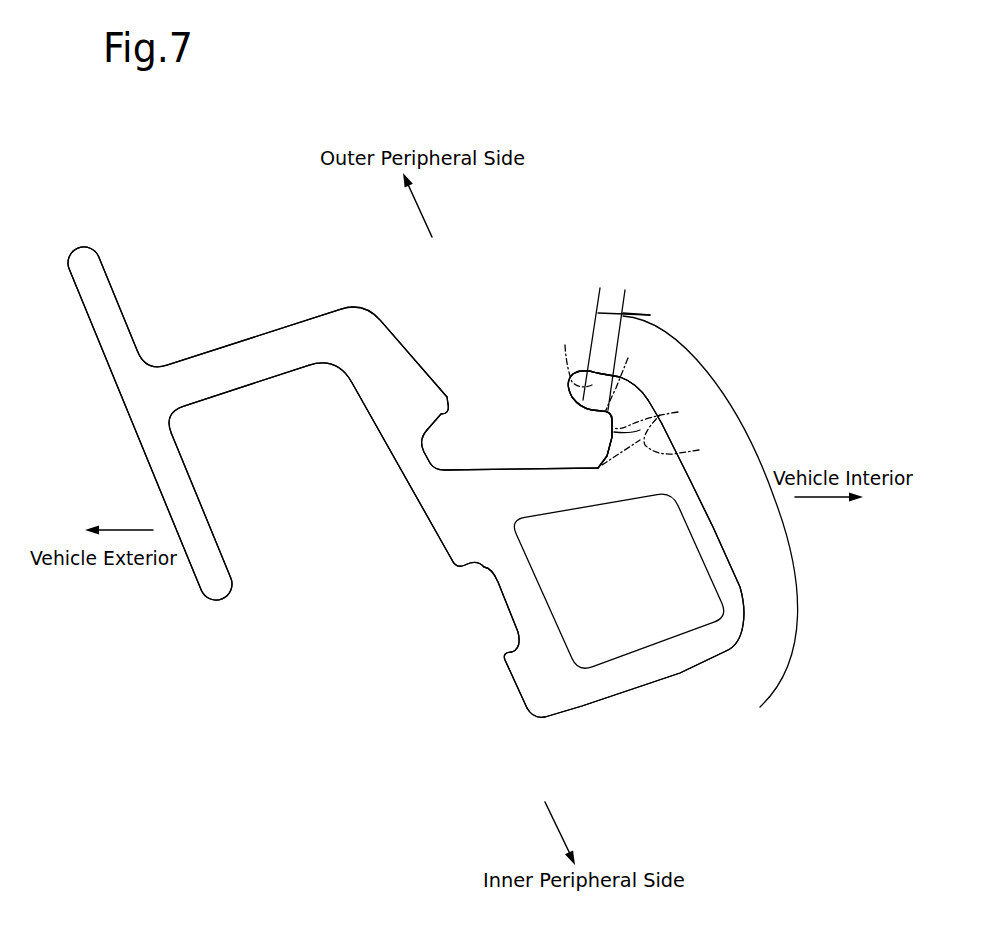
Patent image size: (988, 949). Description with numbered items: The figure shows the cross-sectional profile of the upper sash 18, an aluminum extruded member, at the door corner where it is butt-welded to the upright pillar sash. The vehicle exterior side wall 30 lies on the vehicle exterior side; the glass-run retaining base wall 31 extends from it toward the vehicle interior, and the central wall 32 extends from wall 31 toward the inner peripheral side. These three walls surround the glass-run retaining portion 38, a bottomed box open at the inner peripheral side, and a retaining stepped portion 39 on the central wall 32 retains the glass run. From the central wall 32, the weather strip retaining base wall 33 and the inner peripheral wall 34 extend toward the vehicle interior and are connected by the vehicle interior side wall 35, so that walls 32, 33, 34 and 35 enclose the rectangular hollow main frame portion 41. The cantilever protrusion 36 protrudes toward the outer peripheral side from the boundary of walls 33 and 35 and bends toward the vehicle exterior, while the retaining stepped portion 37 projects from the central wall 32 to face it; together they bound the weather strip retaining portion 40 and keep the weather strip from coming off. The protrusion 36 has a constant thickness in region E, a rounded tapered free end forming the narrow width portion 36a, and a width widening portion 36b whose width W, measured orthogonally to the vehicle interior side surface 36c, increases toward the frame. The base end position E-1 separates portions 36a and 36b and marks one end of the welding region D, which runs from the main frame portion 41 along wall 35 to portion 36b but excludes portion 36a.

The upper sash 18 is at (301, 310).
The vehicle exterior side wall 30 is at (103, 305).
The glass-run retaining base wall 31 is at (227, 360).
The central wall 32 is at (443, 508).
The weather strip retaining base wall 33 is at (585, 490).
The inner peripheral wall 34 is at (662, 673).
The vehicle interior side wall 35 is at (715, 540).
The cantilever protrusion 36 is at (528, 462).
The narrow width portion 36a is at (587, 407).
The width widening portion 36b is at (610, 440).
The vehicle interior side surface 36c is at (643, 395).
The retaining stepped portion 37 is at (447, 409).
The glass-run retaining portion 38 is at (298, 549).
The retaining stepped portion 39 is at (508, 656).
The weather strip retaining portion 40 is at (497, 383).
The main frame portion 41 is at (632, 707).
The welding region D is at (710, 511).
The region of constant wall thickness E is at (616, 349).
The base end position E-1 is at (637, 291).
The width W is at (636, 393).